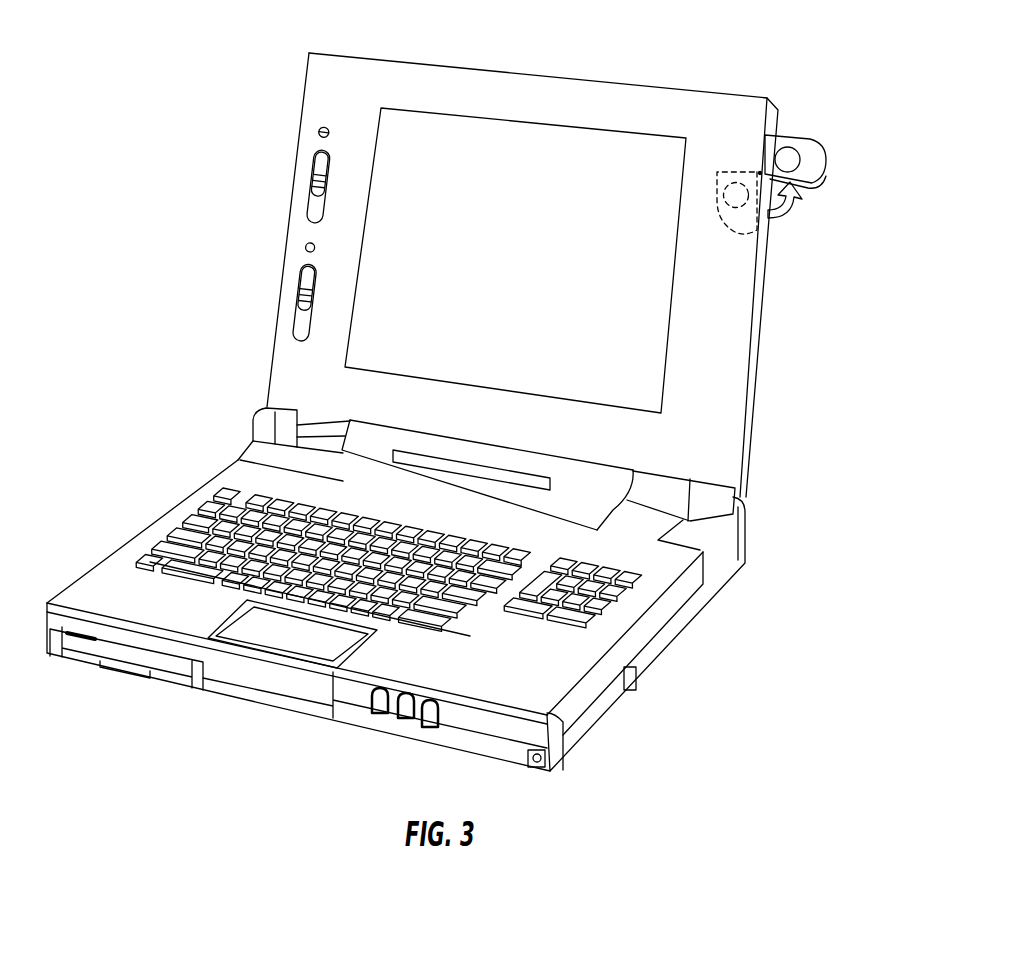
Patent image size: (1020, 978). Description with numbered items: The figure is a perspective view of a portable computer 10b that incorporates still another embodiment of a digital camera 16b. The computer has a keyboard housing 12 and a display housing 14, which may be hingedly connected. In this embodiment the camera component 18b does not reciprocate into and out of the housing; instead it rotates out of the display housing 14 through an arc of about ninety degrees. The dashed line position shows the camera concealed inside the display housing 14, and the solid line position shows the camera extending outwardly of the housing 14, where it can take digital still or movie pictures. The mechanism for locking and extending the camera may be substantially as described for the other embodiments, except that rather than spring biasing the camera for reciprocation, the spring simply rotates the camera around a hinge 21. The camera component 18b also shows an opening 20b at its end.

The portable computer 10b is at (534, 57).
The keyboard housing 12 is at (625, 623).
The display housing 14 is at (728, 335).
The camera 16b is at (822, 100).
The component 18b is at (813, 148).
The aperture 20b is at (798, 163).
The hinge 21 is at (760, 173).